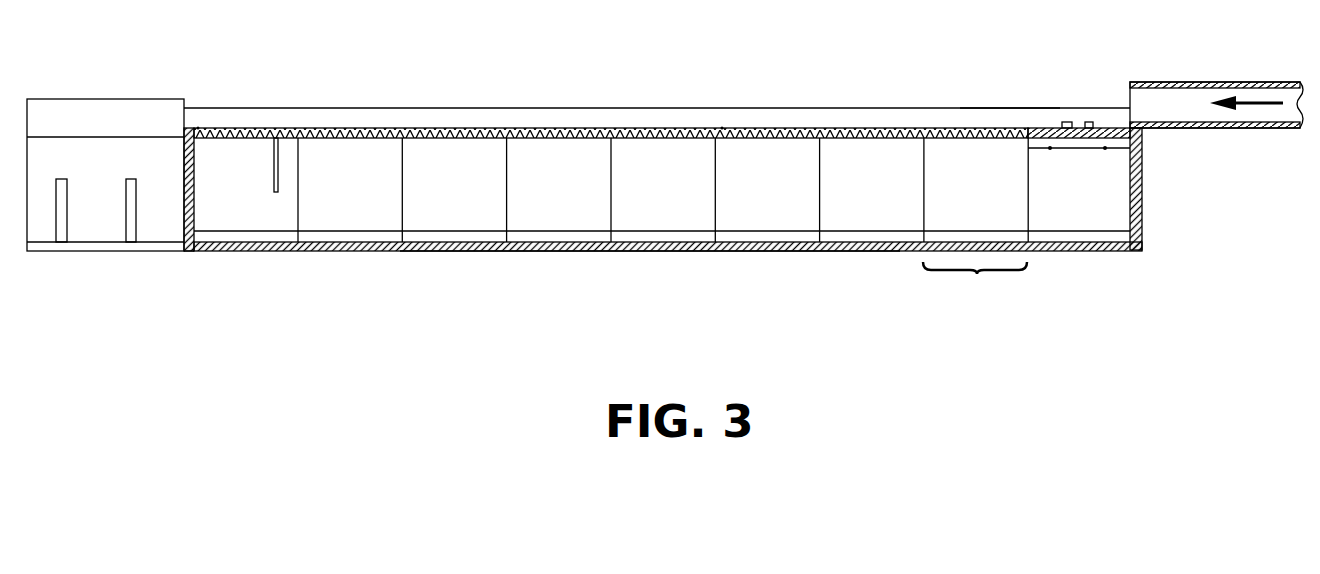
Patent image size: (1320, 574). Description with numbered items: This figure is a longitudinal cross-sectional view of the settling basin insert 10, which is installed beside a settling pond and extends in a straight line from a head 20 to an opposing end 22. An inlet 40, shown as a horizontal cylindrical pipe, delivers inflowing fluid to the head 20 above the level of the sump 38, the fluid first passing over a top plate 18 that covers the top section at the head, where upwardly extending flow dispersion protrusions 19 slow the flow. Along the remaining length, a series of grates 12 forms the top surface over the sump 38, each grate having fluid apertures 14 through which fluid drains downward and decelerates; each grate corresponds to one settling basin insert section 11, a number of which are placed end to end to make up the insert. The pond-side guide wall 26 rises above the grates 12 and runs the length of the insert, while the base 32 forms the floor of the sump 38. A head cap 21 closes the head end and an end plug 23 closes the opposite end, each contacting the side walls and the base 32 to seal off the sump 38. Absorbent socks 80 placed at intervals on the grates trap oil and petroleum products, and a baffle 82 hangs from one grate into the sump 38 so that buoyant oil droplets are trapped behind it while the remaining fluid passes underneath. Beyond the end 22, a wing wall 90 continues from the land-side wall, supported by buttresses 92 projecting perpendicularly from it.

The settling basin insert 10 is at (921, 200).
The settling basin insert section 11 is at (975, 285).
The grate 12 is at (968, 127).
The fluid apertures 14 is at (1008, 120).
The top plate 18 is at (1113, 130).
The flow dispersion protrusions 19 is at (1090, 120).
The head 20 is at (1142, 178).
The head cap 21 is at (1137, 250).
The end 22 is at (183, 192).
The end plug 23 is at (188, 248).
The pond-side guide wall 26 is at (755, 120).
The base 32 is at (632, 251).
The sump 38 is at (250, 205).
The inlet 40 is at (1210, 81).
The absorbent socks 80 is at (198, 127).
The baffle 82 is at (280, 182).
The wing wall 90 is at (110, 155).
The buttresses 92 is at (125, 215).